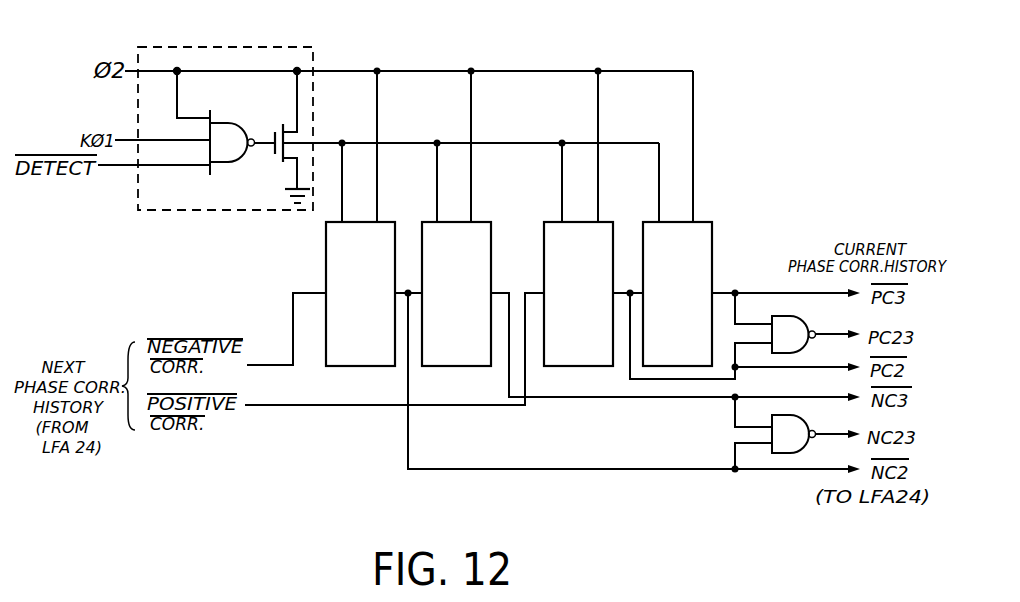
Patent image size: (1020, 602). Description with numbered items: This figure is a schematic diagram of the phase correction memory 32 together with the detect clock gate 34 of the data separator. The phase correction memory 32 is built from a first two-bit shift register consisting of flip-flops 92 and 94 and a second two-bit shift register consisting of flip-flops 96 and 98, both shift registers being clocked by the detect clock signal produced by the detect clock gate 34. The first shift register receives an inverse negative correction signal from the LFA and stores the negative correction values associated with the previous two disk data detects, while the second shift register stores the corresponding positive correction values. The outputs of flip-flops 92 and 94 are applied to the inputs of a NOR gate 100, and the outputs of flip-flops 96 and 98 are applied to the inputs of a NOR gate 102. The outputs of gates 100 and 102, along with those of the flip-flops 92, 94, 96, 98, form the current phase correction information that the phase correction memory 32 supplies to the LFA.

The phase correction memory 32 is at (716, 242).
The detect clock gate 34 is at (258, 47).
The flip-flop 92 is at (352, 368).
The flip-flop 94 is at (468, 368).
The flip-flop 96 is at (596, 366).
The flip-flop 98 is at (714, 270).
The NOR gate 100 is at (794, 416).
The NOR gate 102 is at (796, 318).